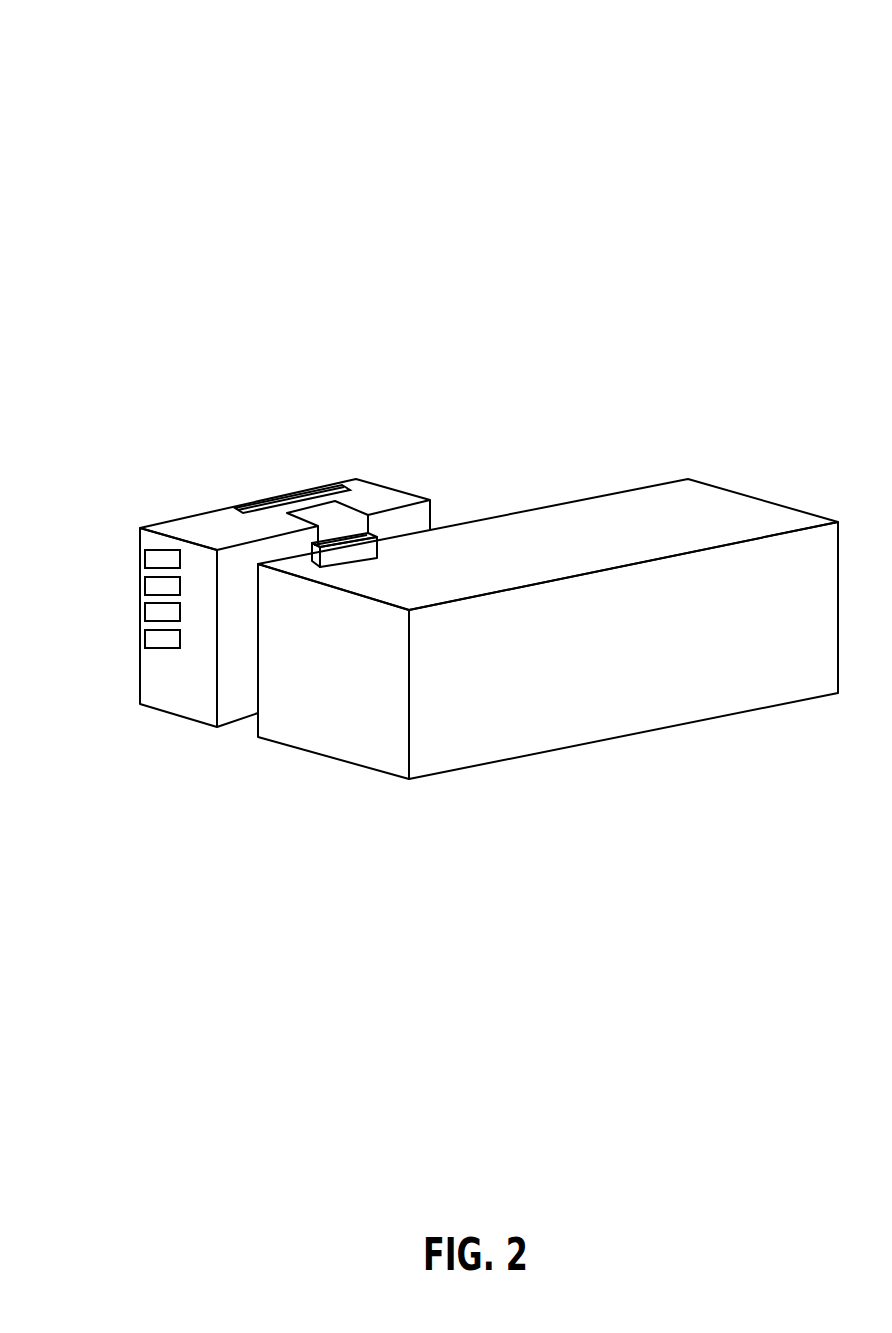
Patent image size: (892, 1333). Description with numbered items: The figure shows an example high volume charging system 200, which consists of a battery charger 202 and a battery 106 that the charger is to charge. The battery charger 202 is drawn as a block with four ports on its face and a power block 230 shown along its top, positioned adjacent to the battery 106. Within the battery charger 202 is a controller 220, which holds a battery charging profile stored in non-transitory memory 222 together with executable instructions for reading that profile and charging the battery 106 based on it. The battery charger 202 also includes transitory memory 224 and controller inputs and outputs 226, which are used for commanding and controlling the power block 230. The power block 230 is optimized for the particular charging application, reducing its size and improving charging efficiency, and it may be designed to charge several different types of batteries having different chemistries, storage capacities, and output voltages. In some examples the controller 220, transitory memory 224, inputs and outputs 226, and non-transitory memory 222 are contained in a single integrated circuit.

The high volume charging system 200 is at (134, 27).
The battery 106 is at (427, 775).
The battery charger 202 is at (177, 517).
The power block 230 is at (265, 503).
The controller inputs and outputs 226 is at (155, 558).
The transitory memory 224 is at (155, 586).
The non-transitory memory 222 is at (155, 612).
The controller 220 is at (155, 637).